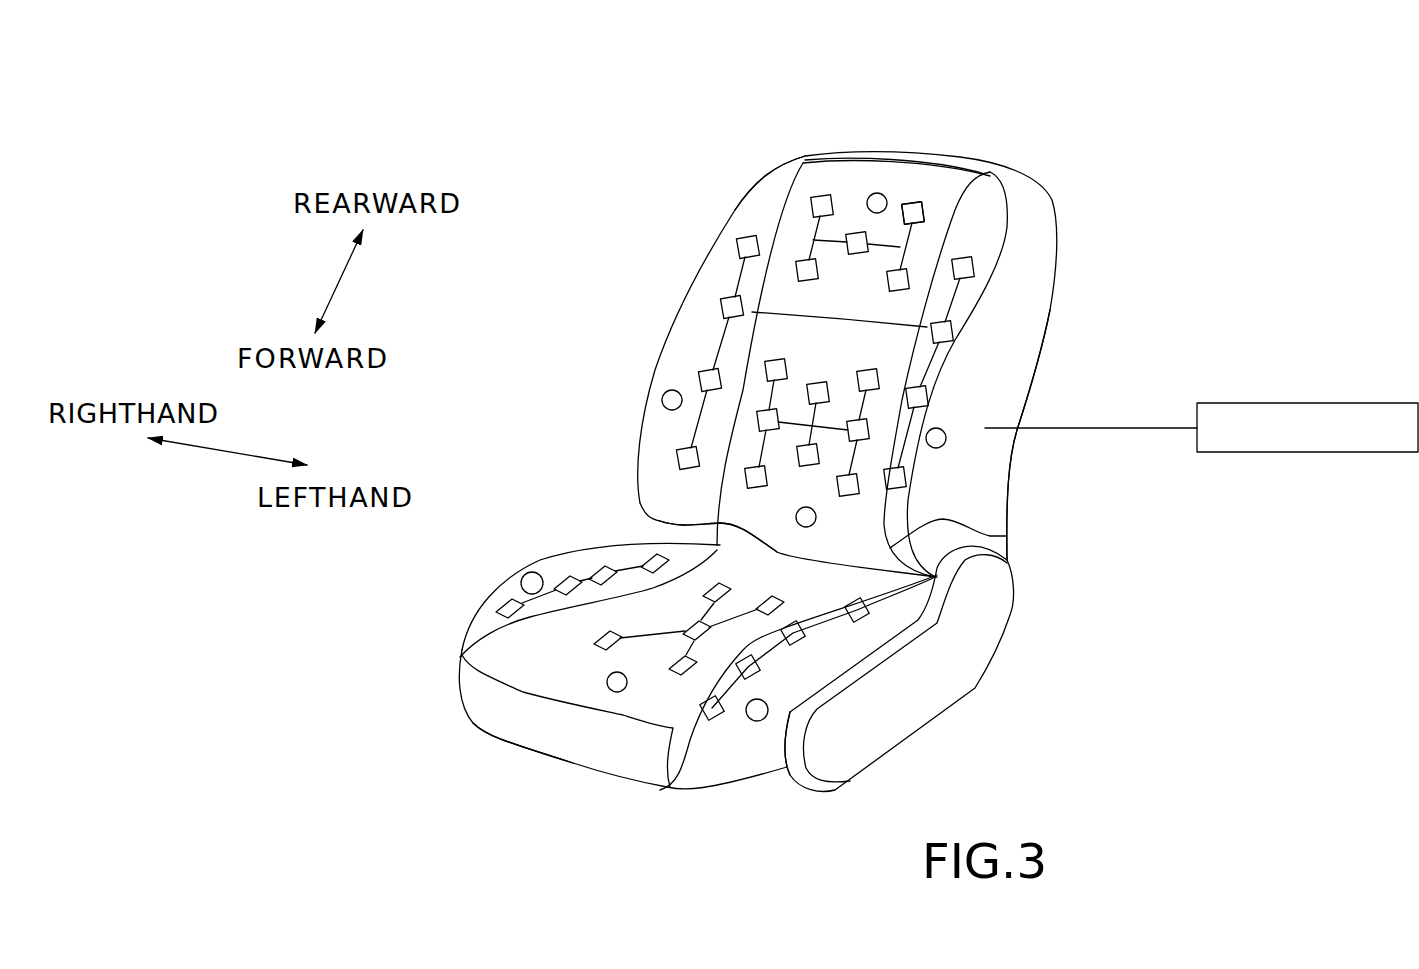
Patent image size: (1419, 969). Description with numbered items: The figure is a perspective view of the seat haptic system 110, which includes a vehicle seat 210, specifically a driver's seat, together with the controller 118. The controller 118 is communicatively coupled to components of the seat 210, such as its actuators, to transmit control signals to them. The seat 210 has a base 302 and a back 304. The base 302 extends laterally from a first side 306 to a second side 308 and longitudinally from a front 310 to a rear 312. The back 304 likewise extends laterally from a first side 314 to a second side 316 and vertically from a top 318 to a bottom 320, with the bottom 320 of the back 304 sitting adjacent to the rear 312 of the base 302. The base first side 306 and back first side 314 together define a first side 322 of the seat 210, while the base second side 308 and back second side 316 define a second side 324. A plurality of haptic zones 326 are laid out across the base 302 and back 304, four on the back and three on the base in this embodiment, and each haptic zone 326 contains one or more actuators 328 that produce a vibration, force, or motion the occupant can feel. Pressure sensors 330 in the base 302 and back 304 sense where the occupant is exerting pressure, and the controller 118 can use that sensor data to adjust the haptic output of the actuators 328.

The seat haptic system 110 is at (618, 108).
The controller 118 is at (1308, 403).
The vehicle seat 210 is at (940, 178).
The base 302 is at (593, 692).
The back 304 is at (1040, 258).
The first side of the base 306 is at (782, 793).
The second side of the base 308 is at (545, 550).
The front of the base 310 is at (603, 785).
The rear of the base 312 is at (1007, 536).
The first side of the back 314 is at (1022, 458).
The second side of the back 316 is at (701, 247).
The top of the back 318 is at (848, 146).
The bottom of the back 320 is at (718, 545).
The first side of the seat 322 is at (1027, 210).
The second side of the seat 324 is at (758, 170).
The haptic zones 326 is at (877, 192).
The actuators 328 is at (912, 208).
The pressure sensors 330 is at (757, 722).